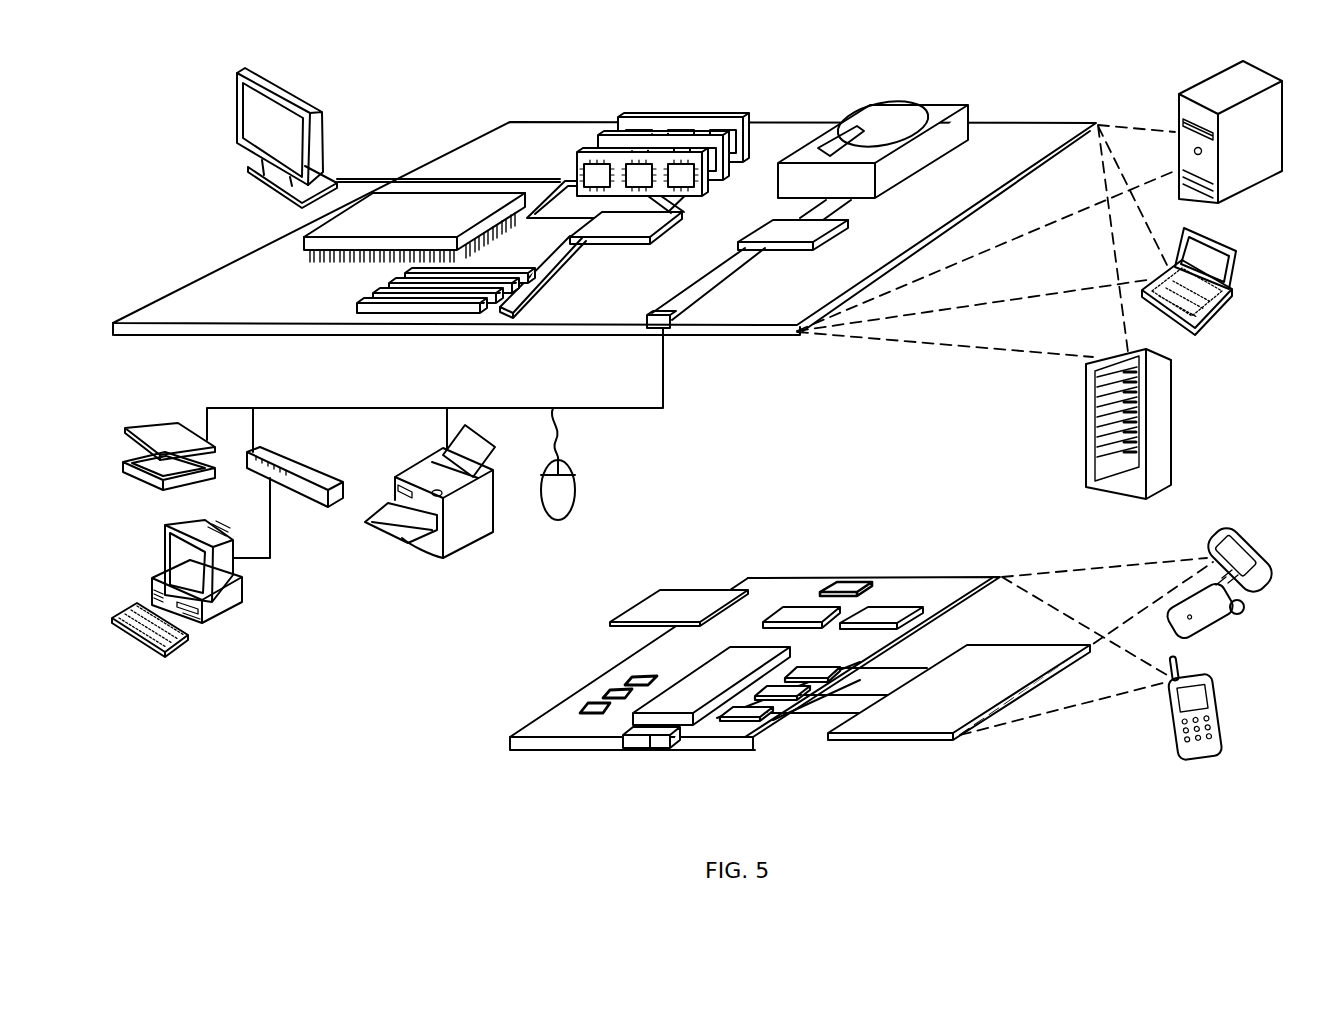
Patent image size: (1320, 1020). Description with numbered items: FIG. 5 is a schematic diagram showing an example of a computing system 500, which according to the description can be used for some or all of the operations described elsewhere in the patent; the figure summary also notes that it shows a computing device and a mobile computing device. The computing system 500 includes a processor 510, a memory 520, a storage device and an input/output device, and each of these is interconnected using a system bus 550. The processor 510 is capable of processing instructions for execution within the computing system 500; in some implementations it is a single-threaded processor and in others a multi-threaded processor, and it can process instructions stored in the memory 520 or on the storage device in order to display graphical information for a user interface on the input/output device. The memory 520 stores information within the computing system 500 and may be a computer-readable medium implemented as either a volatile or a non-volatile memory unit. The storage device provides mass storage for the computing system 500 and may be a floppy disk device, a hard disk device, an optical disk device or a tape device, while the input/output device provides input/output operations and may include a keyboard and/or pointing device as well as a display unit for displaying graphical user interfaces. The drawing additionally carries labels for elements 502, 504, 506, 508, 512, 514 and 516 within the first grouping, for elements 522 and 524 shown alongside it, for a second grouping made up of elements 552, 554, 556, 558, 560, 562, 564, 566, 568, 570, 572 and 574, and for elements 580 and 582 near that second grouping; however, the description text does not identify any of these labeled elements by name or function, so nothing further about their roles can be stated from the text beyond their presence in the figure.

The computing system 500 is at (430, 97).
The processor 502 is at (310, 242).
The memory modules 504 is at (630, 117).
The storage drive 506 is at (860, 106).
The memory interface slot 508 is at (602, 224).
The processor 510 is at (373, 297).
The storage interface 512 is at (777, 227).
The network port 514 is at (668, 323).
The display 516 is at (239, 73).
The memory 520 is at (1166, 107).
The laptop computer 522 is at (1243, 256).
The server 524 is at (1086, 447).
The system bus 550 is at (491, 743).
The processor 552 is at (687, 707).
The display 554 is at (920, 723).
The memory 556 is at (753, 720).
The storage 558 is at (787, 690).
The controller 560 is at (812, 668).
The connector 562 is at (650, 738).
The sensors 564 is at (585, 700).
The memory module 566 is at (803, 615).
The storage module 568 is at (880, 612).
The wireless chip 570 is at (850, 580).
The bus 572 is at (713, 590).
The power module 574 is at (663, 592).
The cellular phone 580 is at (1228, 535).
The mobile phone 582 is at (1172, 712).